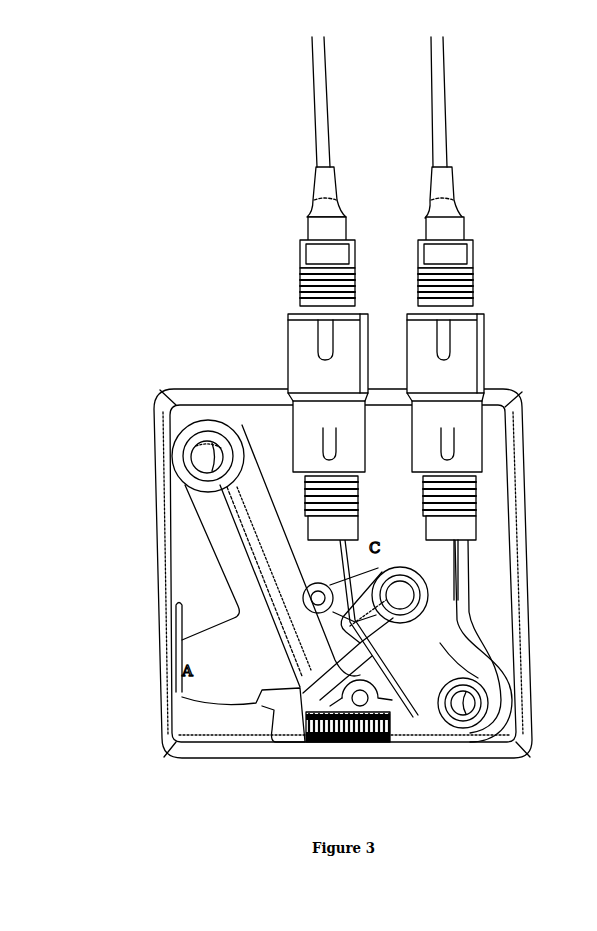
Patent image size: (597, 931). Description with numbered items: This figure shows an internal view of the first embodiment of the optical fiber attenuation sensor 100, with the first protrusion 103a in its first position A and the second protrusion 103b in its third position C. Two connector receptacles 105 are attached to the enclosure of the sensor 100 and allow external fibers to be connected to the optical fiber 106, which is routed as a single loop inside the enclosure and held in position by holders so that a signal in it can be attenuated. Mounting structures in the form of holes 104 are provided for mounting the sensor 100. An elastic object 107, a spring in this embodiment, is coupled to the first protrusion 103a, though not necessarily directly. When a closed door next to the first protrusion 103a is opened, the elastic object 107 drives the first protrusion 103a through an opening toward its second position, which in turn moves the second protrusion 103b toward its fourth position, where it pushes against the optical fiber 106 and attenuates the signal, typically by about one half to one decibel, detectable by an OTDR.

The optical fiber attenuation sensor 100 is at (211, 370).
The first protrusion 103a is at (182, 654).
The second protrusion 103b is at (427, 573).
The holes 104 is at (200, 452).
The connector receptacles 105 is at (305, 410).
The optical fiber 106 is at (473, 612).
The elastic object 107 is at (336, 743).